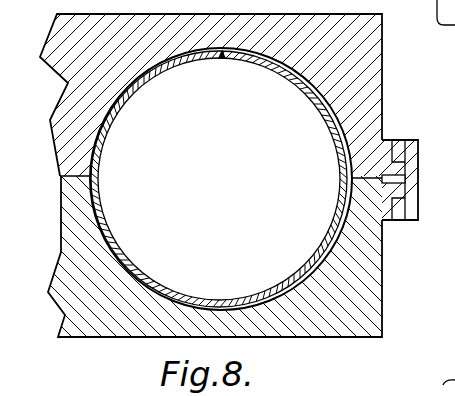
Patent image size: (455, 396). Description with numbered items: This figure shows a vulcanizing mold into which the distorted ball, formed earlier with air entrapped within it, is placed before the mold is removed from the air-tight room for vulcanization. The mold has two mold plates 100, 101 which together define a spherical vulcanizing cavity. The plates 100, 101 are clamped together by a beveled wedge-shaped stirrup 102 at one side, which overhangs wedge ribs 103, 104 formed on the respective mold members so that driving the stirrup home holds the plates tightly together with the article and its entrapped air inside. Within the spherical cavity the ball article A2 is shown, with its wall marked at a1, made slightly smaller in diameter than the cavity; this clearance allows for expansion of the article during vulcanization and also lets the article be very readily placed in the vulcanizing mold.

The mold plate 100 is at (380, 284).
The mold plate 101 is at (378, 97).
The beveled wedge-shaped stirrup 102 is at (418, 167).
The wedge rib 103 is at (418, 202).
The wedge rib 104 is at (397, 155).
The pointer on liner a1 is at (222, 58).
The cylindrical liner sleeve A2 is at (330, 123).